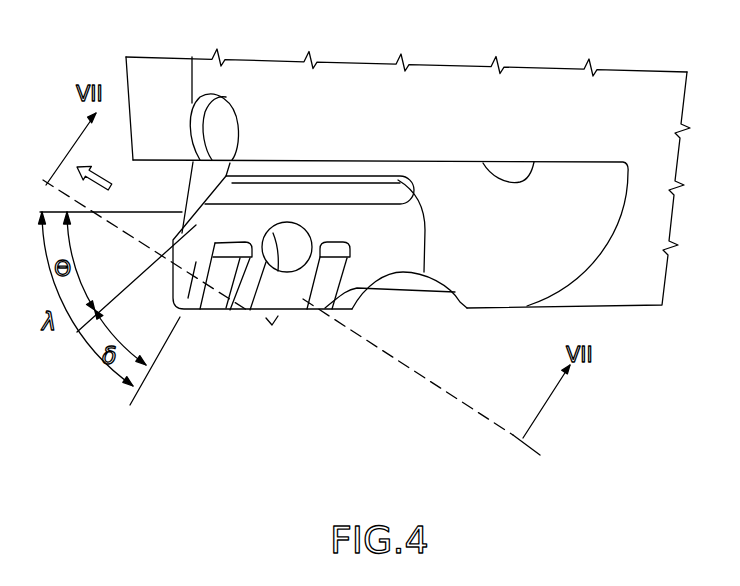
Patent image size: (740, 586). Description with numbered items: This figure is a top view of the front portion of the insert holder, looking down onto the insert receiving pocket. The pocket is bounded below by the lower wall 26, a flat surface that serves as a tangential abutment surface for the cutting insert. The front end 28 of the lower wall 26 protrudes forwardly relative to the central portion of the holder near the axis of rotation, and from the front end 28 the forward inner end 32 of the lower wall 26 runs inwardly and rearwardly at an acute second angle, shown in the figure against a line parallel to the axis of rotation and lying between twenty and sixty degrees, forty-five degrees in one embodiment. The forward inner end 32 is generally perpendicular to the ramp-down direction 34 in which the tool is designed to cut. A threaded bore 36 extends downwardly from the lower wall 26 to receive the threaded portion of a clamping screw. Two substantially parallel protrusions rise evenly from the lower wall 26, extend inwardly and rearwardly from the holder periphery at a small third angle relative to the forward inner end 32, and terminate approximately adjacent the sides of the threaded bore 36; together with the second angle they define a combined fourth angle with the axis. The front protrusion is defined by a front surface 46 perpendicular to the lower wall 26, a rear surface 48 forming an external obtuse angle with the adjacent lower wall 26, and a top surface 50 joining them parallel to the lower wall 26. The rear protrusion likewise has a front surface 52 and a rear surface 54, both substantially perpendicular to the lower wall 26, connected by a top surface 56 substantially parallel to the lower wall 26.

The lower wall 26 is at (400, 247).
The front end 28 is at (176, 277).
The forward inner end 32 is at (182, 235).
The ramp-down direction 34 is at (110, 186).
The threaded bore 36 is at (278, 272).
The front surface 46 is at (177, 300).
The rear surface 48 is at (222, 312).
The top surface 50 is at (196, 302).
The front surface 52 is at (296, 289).
The rear surface 54 is at (362, 285).
The top surface 56 is at (306, 302).